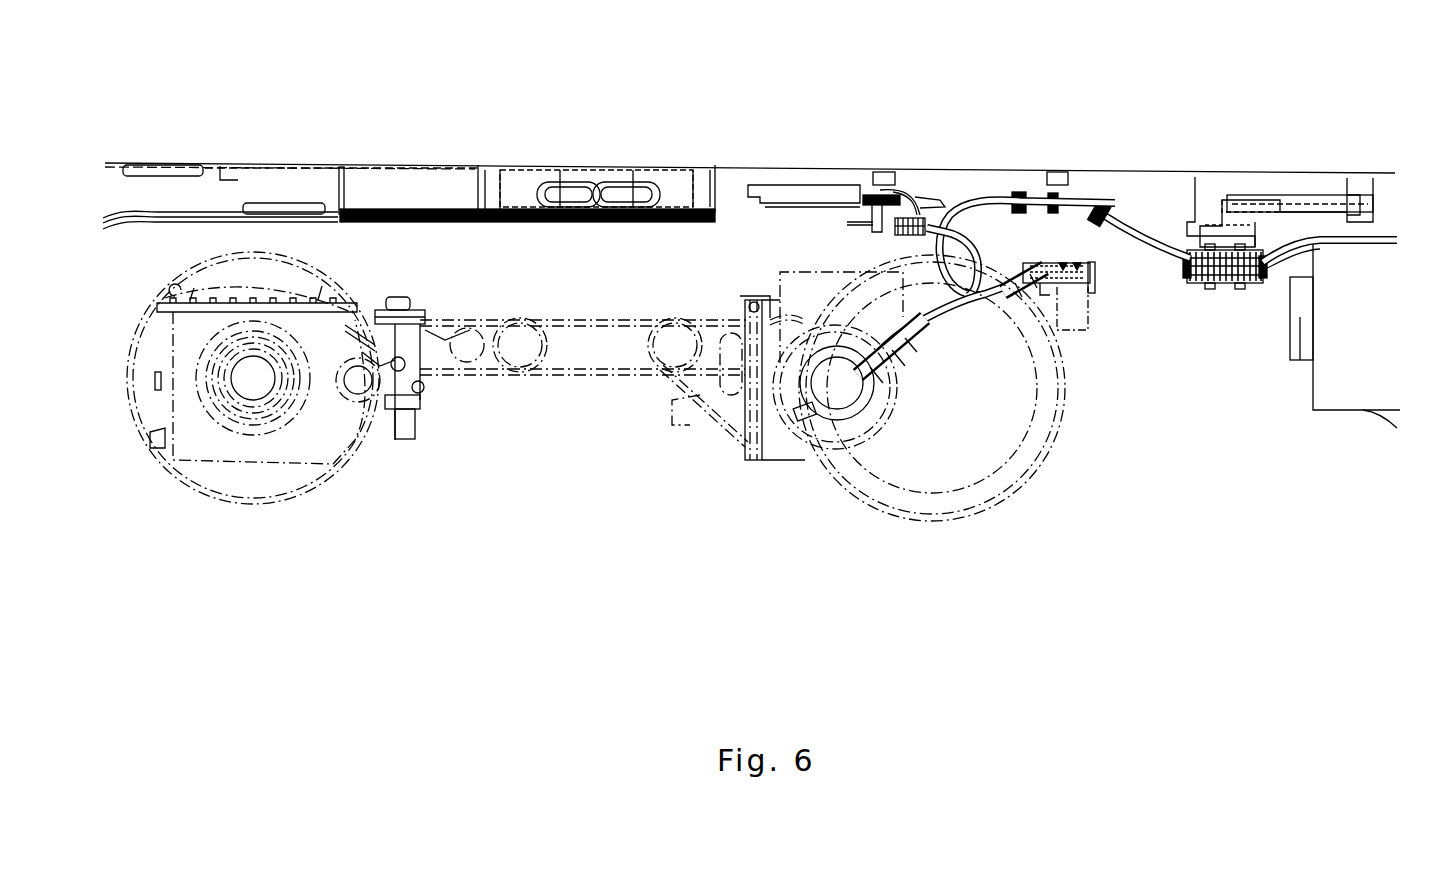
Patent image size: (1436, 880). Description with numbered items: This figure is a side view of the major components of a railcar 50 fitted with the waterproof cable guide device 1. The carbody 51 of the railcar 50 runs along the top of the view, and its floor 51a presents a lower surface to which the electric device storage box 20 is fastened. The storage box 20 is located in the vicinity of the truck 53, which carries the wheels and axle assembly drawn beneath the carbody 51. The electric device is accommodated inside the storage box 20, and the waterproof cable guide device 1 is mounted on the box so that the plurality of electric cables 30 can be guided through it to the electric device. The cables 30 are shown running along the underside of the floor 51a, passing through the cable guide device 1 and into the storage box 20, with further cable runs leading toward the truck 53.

The waterproof cable guide device 1 is at (1226, 288).
The electric device storage box 20 is at (1228, 242).
The electric cables 30 is at (1156, 248).
The railcar 50 is at (752, 165).
The carbody 51 is at (966, 170).
The floor 51a is at (1139, 172).
The truck 53 is at (778, 460).